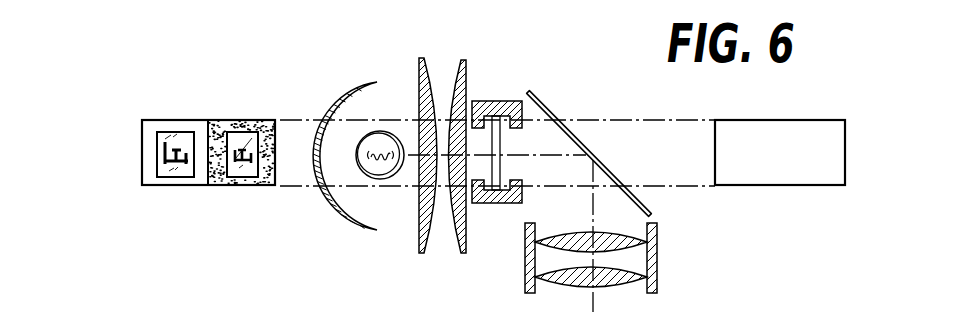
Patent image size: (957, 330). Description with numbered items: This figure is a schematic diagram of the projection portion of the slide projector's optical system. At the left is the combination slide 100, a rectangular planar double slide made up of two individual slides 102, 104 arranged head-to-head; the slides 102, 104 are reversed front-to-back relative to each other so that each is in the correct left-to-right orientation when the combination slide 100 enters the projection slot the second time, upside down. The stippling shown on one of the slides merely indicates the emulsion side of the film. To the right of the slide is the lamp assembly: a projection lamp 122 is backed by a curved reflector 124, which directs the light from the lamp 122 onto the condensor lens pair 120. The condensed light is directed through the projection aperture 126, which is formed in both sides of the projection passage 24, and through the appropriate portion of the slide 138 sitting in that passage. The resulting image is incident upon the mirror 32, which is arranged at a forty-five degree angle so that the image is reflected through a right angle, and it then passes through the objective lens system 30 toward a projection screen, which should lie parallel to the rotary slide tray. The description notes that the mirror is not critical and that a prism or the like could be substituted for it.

The combination slide 100 is at (191, 206).
The individual slide 102 is at (179, 120).
The individual slide 104 is at (245, 120).
The condensor lens pair 120 is at (465, 70).
The projection lamp 122 is at (387, 171).
The curved reflector 124 is at (364, 83).
The projection aperture 126 is at (475, 142).
The slide 138 is at (498, 124).
The projection passage 24 is at (495, 204).
The mirror 32 is at (573, 132).
The objective lens system 30 is at (658, 277).